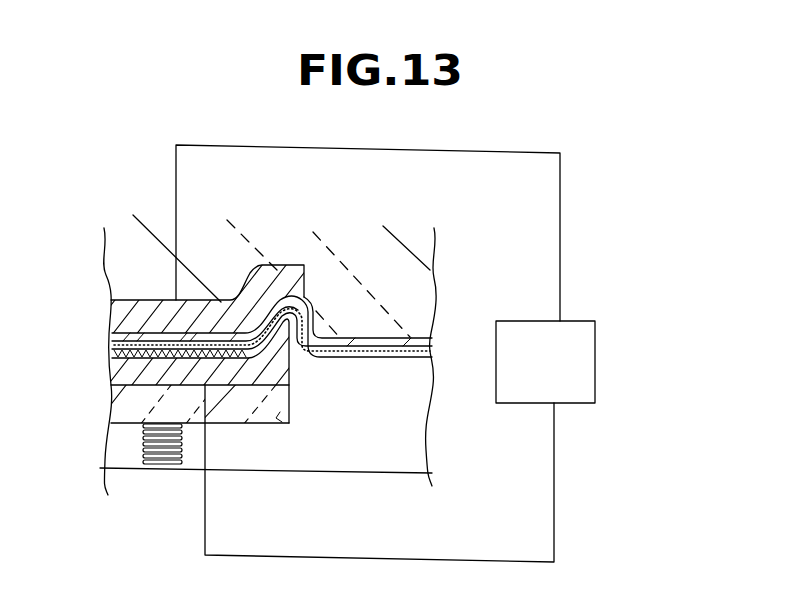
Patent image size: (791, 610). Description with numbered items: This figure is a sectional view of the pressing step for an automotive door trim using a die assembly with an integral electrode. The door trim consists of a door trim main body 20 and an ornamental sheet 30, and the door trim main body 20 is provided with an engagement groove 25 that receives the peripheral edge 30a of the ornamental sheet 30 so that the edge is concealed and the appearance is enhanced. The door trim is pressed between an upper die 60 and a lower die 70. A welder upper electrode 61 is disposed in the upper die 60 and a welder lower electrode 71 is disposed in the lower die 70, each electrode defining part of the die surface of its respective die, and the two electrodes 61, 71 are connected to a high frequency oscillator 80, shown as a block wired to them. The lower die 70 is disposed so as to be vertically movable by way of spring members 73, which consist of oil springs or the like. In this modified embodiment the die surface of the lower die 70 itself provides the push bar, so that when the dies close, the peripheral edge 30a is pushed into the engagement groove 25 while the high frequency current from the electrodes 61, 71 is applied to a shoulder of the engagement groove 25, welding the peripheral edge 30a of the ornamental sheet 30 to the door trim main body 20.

The door trim main body 20 is at (385, 360).
The engagement groove 25 is at (291, 312).
The ornamental sheet 30 is at (112, 368).
The peripheral edge 30a is at (294, 322).
The upper die 60 is at (347, 307).
The welder upper electrode 61 is at (183, 313).
The lower die 70 is at (228, 459).
The welder lower electrode 71 is at (243, 373).
The spring members 73 is at (165, 450).
The high frequency oscillator 80 is at (575, 404).